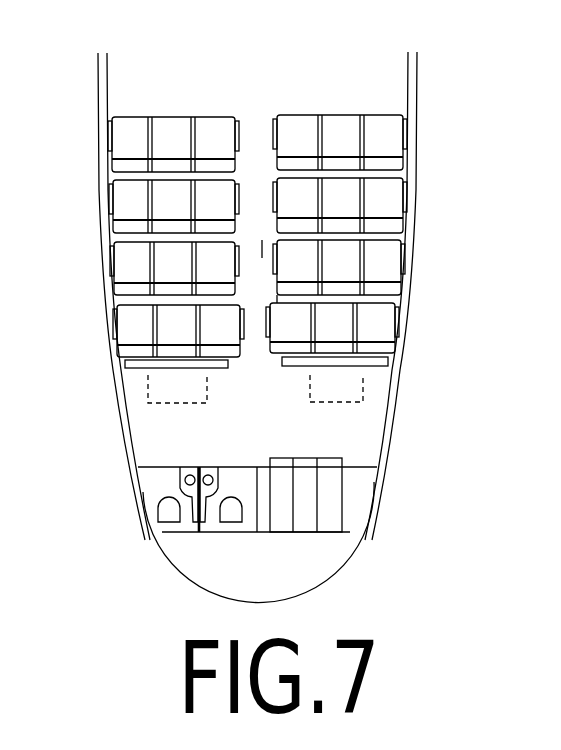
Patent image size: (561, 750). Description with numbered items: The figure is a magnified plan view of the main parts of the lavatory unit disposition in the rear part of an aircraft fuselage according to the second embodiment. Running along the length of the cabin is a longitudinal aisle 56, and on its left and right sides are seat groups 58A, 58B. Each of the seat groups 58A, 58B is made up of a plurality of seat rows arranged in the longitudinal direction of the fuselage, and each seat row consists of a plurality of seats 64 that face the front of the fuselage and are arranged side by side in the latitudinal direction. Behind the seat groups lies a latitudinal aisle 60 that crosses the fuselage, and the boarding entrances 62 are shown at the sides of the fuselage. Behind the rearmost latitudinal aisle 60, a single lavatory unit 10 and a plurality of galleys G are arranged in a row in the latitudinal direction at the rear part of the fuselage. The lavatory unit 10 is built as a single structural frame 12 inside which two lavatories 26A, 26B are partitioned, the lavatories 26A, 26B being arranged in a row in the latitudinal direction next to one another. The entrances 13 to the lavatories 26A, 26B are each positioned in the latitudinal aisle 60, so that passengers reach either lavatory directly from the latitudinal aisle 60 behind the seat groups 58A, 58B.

The lavatory unit 10 is at (261, 327).
The structural frame 12 is at (142, 512).
The entrances 13 is at (167, 467).
The lavatory 26A is at (213, 525).
The lavatory 26B is at (188, 522).
The galleys G is at (307, 527).
The longitudinal aisle 56 is at (262, 257).
The seat group 58A is at (175, 91).
The seat group 58B is at (335, 89).
The latitudinal aisle 60 is at (337, 417).
The boarding entrances 62 is at (118, 425).
The seats 64 is at (127, 120).